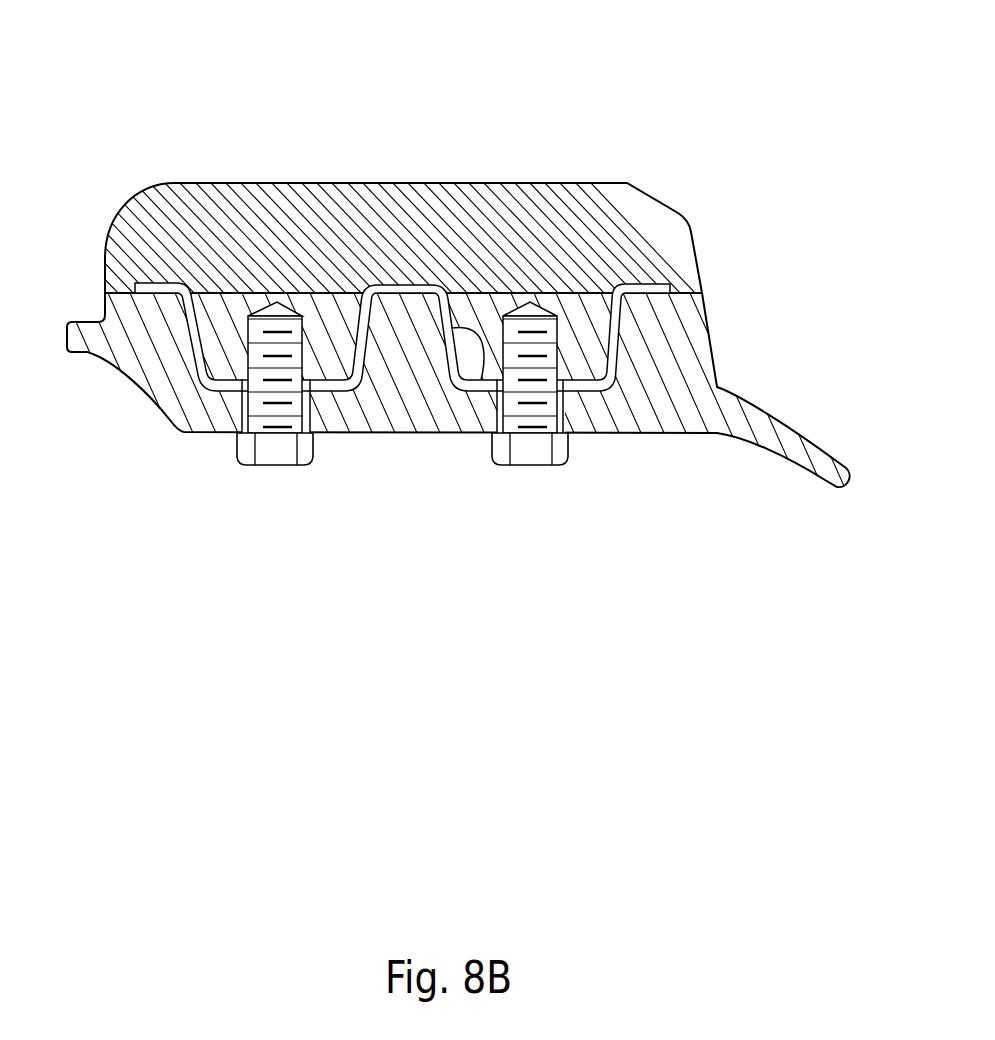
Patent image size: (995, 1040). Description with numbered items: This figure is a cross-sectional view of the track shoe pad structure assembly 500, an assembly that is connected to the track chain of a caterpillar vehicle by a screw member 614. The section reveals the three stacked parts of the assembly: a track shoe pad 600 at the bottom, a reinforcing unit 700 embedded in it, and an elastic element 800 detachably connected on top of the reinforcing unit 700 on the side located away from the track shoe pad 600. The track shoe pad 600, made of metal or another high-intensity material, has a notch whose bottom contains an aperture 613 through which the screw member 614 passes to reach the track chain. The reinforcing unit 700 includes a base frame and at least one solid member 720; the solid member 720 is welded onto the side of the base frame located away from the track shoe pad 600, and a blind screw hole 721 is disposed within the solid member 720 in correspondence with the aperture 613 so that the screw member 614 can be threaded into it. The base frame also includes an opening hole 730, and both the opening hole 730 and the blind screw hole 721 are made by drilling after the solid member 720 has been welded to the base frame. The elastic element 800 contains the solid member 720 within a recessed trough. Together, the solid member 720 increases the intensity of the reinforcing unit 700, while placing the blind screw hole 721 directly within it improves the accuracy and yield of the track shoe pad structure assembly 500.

The track shoe pad structure assembly 500 is at (150, 133).
The track shoe pad 600 is at (160, 372).
The aperture 613 is at (248, 433).
The screw member 614 is at (280, 440).
The reinforcing unit 700 is at (618, 348).
The solid member 720 is at (476, 336).
The blind screw hole 721 is at (503, 314).
The opening hole 730 is at (611, 393).
The elastic element 800 is at (398, 195).